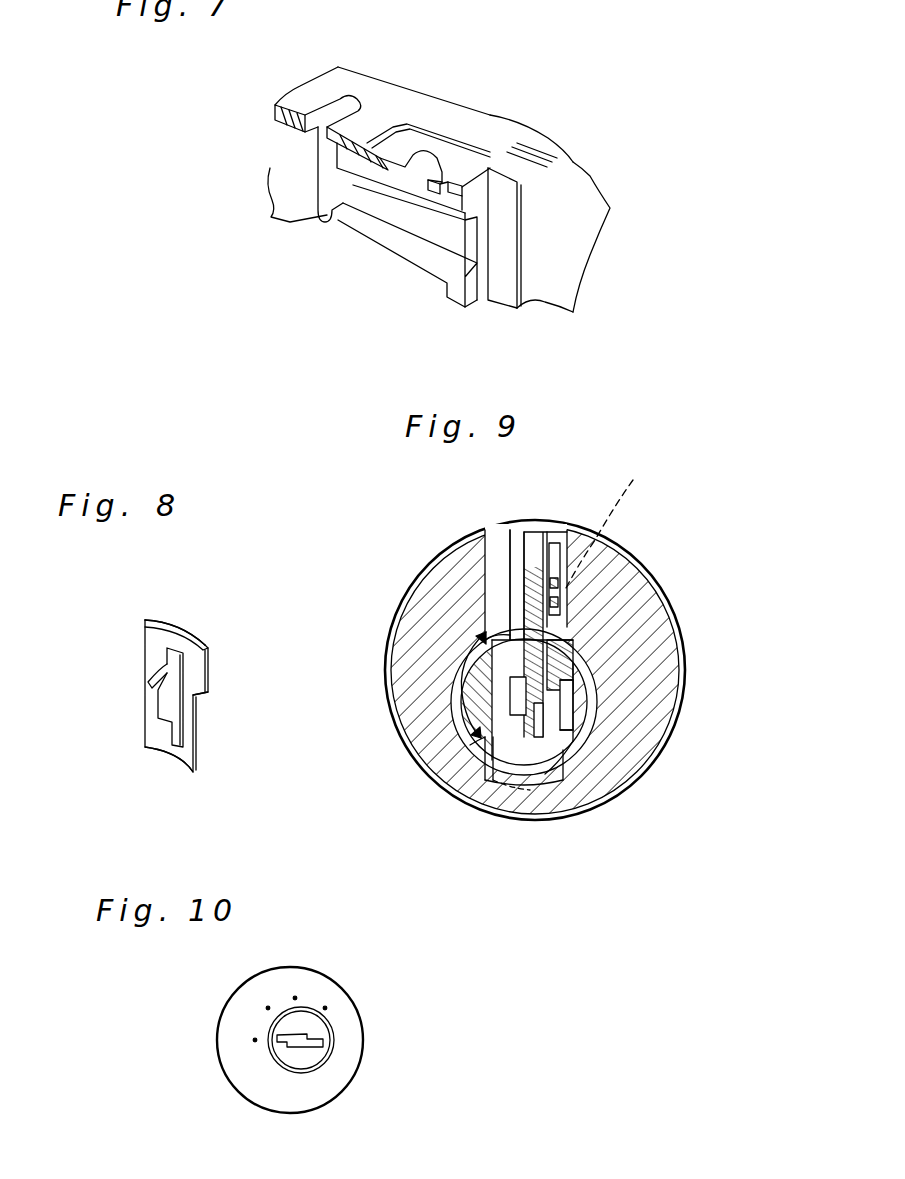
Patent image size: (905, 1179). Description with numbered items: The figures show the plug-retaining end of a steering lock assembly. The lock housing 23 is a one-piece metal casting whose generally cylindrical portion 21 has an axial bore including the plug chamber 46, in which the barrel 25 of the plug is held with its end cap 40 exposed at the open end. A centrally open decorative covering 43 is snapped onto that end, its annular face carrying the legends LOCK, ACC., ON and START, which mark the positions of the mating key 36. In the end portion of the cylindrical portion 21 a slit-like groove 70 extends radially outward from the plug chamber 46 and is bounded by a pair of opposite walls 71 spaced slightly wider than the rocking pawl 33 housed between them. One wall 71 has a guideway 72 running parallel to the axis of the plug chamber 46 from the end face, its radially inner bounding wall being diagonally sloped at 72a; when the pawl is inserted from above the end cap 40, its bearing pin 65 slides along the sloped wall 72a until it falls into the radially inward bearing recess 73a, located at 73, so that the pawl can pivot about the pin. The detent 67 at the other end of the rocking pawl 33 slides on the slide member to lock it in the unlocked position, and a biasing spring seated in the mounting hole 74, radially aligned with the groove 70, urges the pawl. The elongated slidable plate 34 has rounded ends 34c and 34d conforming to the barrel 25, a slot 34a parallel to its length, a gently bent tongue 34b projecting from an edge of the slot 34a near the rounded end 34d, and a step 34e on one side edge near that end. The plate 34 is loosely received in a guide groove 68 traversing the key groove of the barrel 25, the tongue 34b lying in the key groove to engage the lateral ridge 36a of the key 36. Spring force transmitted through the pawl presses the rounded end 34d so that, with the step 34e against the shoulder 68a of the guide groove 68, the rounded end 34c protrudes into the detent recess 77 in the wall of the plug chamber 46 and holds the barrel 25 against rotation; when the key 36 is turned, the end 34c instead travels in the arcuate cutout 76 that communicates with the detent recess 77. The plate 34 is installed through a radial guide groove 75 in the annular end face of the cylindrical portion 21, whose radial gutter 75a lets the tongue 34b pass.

In FIG. 7, the cylindrical portion 21 is at (557, 247).
In FIG. 9, the cylindrical portion 21 is at (450, 575).
In FIG. 7, the lock housing 23 is at (560, 197).
In FIG. 9, the barrel 25 is at (580, 730).
In FIG. 9, the rocking pawl 33 is at (560, 600).
In FIG. 8, the slidable plate 34 is at (128, 640).
In FIG. 9, the slidable plate 34 is at (568, 680).
In FIG. 8, the slot 34a is at (168, 700).
In FIG. 8, the tongue 34b is at (148, 683).
In FIG. 9, the tongue 34b is at (510, 663).
In FIG. 8, the rounded end 34c is at (167, 768).
In FIG. 9, the rounded end 34c is at (547, 765).
In FIG. 8, the rounded end 34d is at (182, 627).
In FIG. 9, the rounded end 34d is at (513, 620).
In FIG. 8, the step 34e is at (205, 697).
In FIG. 9, the step 34e is at (595, 682).
In FIG. 9, the key 36 is at (575, 745).
In FIG. 9, the lateral ridge 36a is at (530, 775).
In FIG. 10, the end cap 40 is at (310, 1053).
In FIG. 10, the decorative covering 43 is at (263, 1093).
In FIG. 9, the plug chamber 46 is at (580, 702).
In FIG. 9, the bearing pin 65 is at (617, 523).
In FIG. 9, the detent 67 is at (520, 635).
In FIG. 9, the guide groove 68 is at (478, 750).
In FIG. 9, the shoulder 68a is at (563, 716).
In FIG. 7, the slit-like groove 70 is at (378, 240).
In FIG. 9, the slit-like groove 70 is at (528, 552).
In FIG. 7, the walls 71 is at (340, 228).
In FIG. 7, the guideway 72 is at (456, 243).
In FIG. 9, the guideway 72 is at (533, 597).
In FIG. 7, the sloped wall 72a is at (423, 241).
In FIG. 9, the sloped wall 72a is at (555, 665).
In FIG. 7, the tab 73 is at (338, 112).
In FIG. 7, the bearing recess 73a is at (270, 218).
In FIG. 7, the mounting hole 74 is at (422, 157).
In FIG. 7, the radial guide groove 75 is at (505, 262).
In FIG. 9, the radial guide groove 75 is at (490, 555).
In FIG. 7, the radial gutter 75a is at (460, 187).
In FIG. 9, the radial gutter 75a is at (516, 535).
In FIG. 9, the arcuate cutout 76 is at (457, 703).
In FIG. 9, the detent recess 77 is at (545, 782).